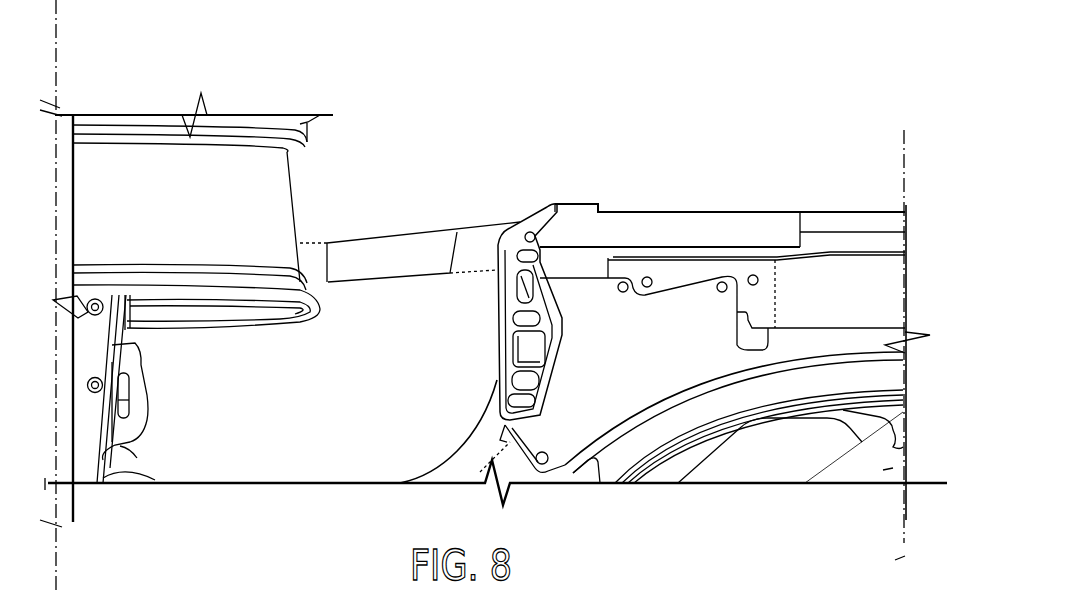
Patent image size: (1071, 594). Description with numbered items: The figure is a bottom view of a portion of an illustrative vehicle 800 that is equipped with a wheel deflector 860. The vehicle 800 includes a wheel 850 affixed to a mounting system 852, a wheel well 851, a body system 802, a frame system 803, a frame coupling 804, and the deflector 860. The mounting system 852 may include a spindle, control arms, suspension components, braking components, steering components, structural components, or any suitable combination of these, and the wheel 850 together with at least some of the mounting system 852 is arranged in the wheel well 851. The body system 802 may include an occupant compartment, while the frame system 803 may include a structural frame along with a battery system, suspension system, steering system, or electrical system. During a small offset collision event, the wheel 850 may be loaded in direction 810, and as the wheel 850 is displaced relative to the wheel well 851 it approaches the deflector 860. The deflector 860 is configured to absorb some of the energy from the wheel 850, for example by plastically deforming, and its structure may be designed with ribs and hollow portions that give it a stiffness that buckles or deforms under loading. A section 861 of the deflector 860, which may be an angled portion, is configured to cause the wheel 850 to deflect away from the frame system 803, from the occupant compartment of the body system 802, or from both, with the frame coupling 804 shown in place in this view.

The vehicle 800 is at (735, 316).
The body system 802 is at (891, 221).
The frame system 803 is at (648, 490).
The frame coupling 804 is at (718, 318).
The direction 810 is at (125, 60).
The wheel 850 is at (194, 307).
The wheel well 851 is at (410, 352).
The mounting system 852 is at (163, 425).
The wheel deflector 860 is at (543, 287).
The section 861 is at (505, 203).